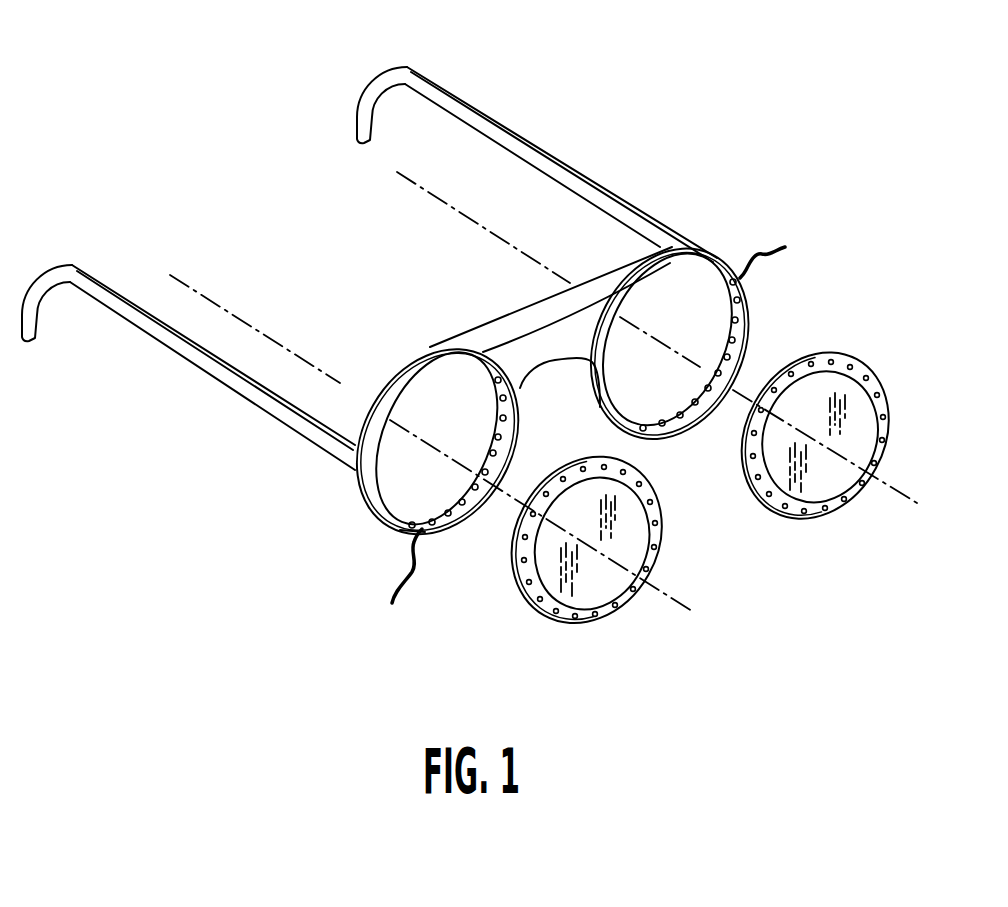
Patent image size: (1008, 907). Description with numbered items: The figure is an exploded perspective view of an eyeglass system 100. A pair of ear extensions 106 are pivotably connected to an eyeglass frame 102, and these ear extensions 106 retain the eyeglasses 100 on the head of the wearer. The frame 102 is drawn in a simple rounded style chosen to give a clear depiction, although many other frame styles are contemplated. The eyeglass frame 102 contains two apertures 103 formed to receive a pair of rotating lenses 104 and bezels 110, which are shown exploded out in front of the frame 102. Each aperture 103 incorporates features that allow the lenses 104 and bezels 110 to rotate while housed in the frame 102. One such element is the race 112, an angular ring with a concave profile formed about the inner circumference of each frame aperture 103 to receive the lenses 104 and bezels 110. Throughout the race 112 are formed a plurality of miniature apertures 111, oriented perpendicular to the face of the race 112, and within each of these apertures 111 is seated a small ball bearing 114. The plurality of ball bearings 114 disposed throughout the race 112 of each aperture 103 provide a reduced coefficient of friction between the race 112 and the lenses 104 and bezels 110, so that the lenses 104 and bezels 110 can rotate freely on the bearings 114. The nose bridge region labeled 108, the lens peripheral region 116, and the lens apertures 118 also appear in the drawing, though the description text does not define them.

The eyeglass system 100 is at (121, 48).
The eyeglass frame 102 is at (358, 483).
The aperture 103 is at (435, 397).
The rotating lens 104 is at (538, 613).
The ear extension 106 is at (153, 327).
The nose bridge 108 is at (540, 347).
The bezel 110 is at (652, 517).
The miniature aperture 111 is at (598, 435).
The race 112 is at (442, 532).
The ball bearing 114 is at (417, 533).
The lens peripheral region 116 is at (512, 570).
The lens apertures 118 is at (593, 613).